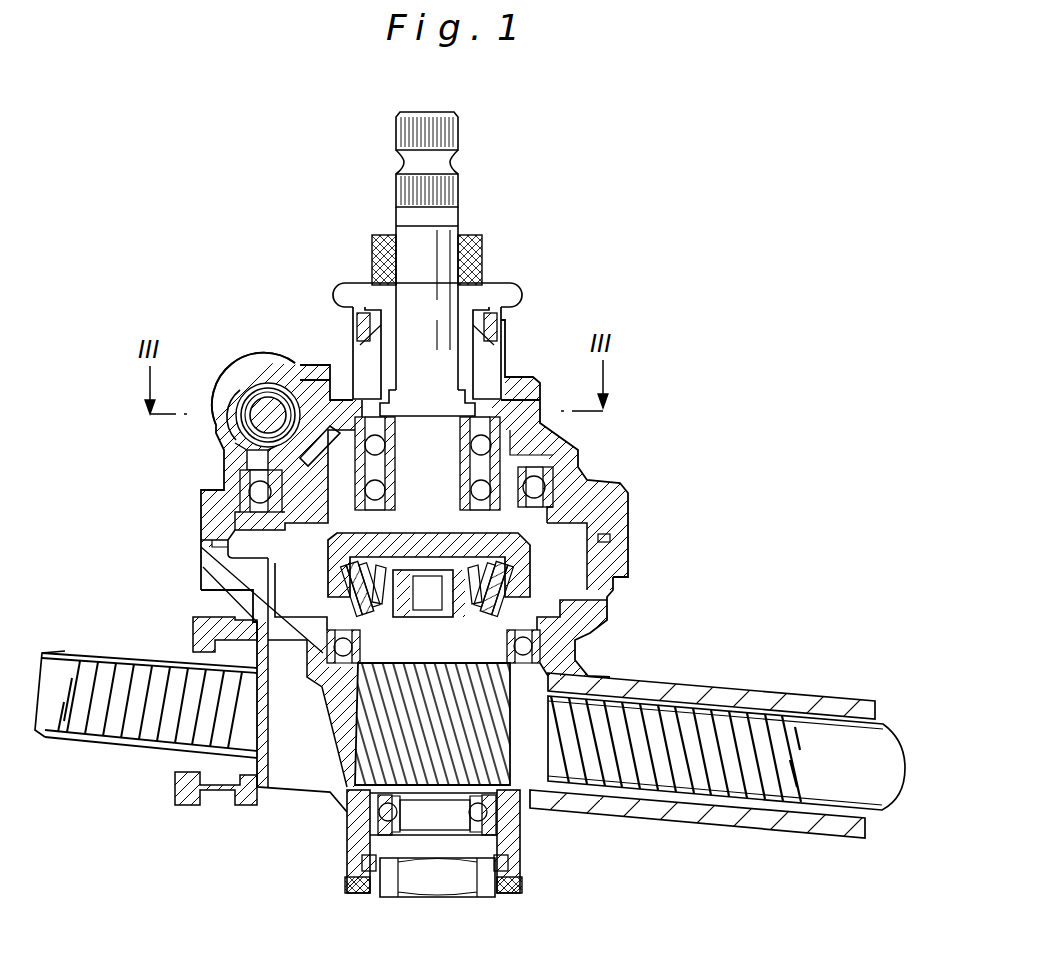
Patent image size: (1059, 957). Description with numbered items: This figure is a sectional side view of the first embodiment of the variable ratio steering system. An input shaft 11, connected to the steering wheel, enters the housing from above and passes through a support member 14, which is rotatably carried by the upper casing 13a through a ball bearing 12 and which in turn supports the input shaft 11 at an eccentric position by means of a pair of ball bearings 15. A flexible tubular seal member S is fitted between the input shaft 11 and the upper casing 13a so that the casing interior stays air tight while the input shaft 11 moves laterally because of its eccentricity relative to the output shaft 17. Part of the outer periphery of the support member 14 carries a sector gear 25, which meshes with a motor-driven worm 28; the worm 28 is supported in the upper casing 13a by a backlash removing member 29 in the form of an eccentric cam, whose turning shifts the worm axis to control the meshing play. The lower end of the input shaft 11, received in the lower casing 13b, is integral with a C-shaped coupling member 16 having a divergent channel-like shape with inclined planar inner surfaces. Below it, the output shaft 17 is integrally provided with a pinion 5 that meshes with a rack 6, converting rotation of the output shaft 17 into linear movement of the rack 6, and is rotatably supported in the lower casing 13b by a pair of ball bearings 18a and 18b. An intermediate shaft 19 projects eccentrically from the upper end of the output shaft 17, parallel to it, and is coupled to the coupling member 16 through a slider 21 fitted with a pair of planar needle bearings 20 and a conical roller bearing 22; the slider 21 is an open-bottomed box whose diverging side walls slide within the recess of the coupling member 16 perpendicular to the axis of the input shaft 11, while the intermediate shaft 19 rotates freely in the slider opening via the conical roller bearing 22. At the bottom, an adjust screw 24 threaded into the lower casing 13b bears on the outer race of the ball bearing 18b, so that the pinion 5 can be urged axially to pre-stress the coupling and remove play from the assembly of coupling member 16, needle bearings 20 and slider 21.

The input shaft 11 is at (465, 210).
The flexible tubular seal member S is at (524, 294).
The ball bearing 12 is at (548, 482).
The upper casing 13a is at (622, 513).
The lower casing 13b is at (606, 620).
The support member 14 is at (350, 414).
The pair of ball bearings 15 is at (515, 458).
The coupling member 16 is at (532, 553).
The output shaft 17 is at (356, 675).
The ball bearing 18a is at (545, 647).
The ball bearing 18b is at (496, 832).
The intermediate shaft 19 is at (430, 610).
The planar needle bearings 20 is at (352, 586).
The slider 21 is at (360, 614).
The conical roller bearing 22 is at (472, 602).
The adjust screw 24 is at (375, 897).
The sector gear 25 is at (282, 397).
The worm 28 is at (268, 388).
The backlash removing member 29 is at (243, 395).
The pinion 5 is at (512, 795).
The rack 6 is at (632, 778).